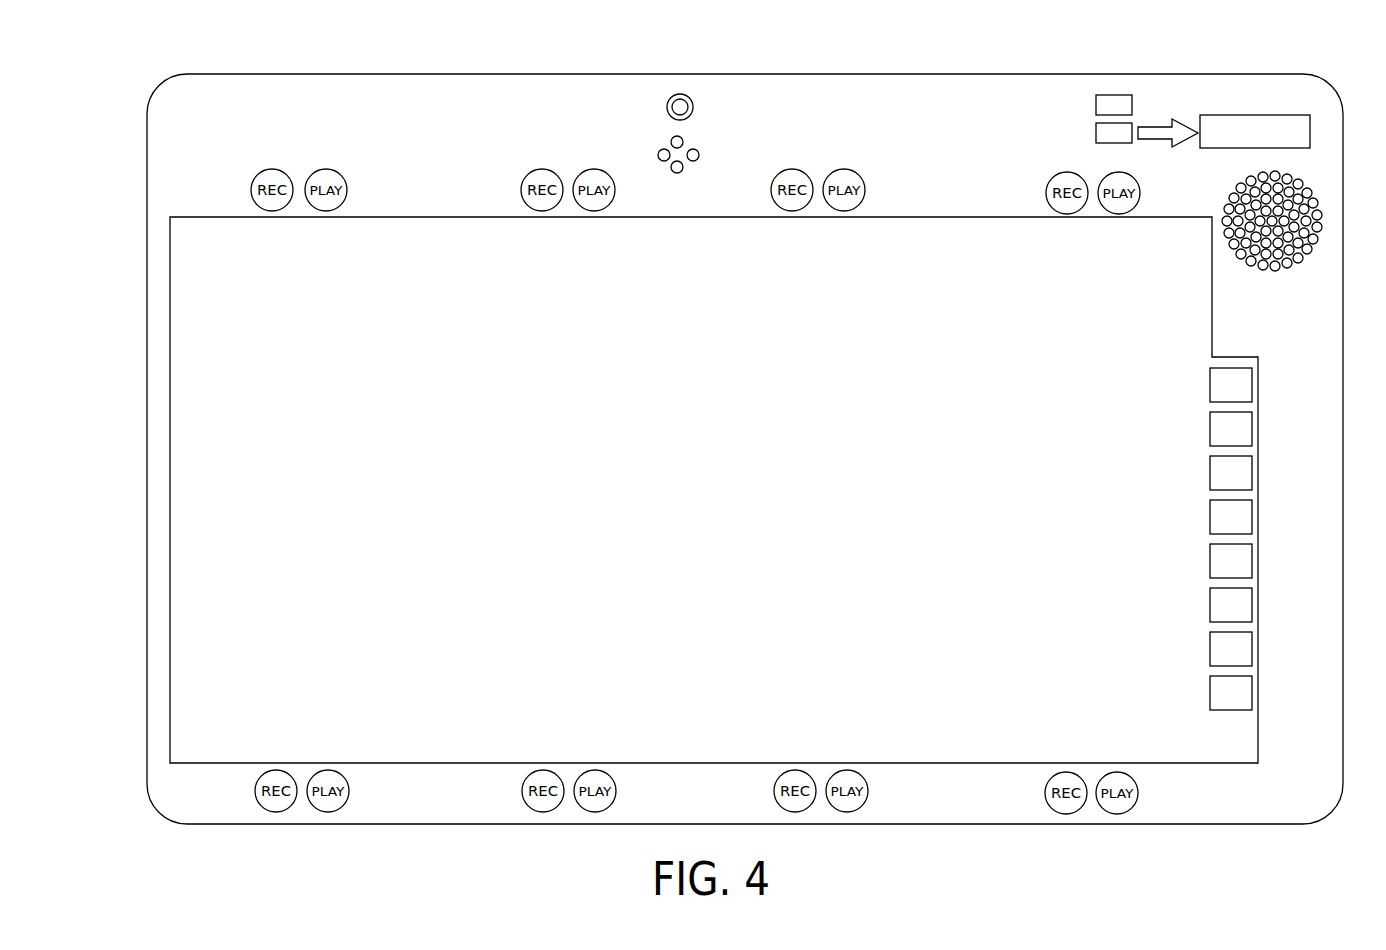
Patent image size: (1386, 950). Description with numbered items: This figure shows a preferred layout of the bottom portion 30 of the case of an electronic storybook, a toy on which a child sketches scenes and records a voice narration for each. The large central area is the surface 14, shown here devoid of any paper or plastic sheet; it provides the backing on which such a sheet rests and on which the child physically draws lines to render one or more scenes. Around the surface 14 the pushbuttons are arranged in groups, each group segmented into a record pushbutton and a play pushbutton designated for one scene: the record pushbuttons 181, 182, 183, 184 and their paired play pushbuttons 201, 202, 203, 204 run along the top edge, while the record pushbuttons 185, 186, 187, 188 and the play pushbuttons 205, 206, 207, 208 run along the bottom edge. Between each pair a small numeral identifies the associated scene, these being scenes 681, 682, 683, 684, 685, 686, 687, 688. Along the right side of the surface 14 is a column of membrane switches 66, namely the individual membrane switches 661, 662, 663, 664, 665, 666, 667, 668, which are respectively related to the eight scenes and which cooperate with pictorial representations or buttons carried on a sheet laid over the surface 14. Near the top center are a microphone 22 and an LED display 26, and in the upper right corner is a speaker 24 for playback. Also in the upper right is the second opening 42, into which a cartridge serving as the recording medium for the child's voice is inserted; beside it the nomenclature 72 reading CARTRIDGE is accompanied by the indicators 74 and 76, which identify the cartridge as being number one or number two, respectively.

The bottom portion 30 is at (386, 74).
The surface 14 is at (744, 407).
The record pushbutton 181 is at (266, 168).
The record pushbutton 182 is at (528, 176).
The record pushbutton 183 is at (771, 193).
The record pushbutton 184 is at (1046, 193).
The record pushbutton 185 is at (258, 778).
The record pushbutton 186 is at (540, 770).
The record pushbutton 187 is at (792, 770).
The record pushbutton 188 is at (1050, 776).
The play pushbutton 201 is at (332, 170).
The play pushbutton 202 is at (580, 172).
The play pushbutton 203 is at (866, 190).
The play pushbutton 204 is at (1141, 195).
The play pushbutton 205 is at (345, 778).
The play pushbutton 206 is at (605, 772).
The play pushbutton 207 is at (858, 772).
The play pushbutton 208 is at (1116, 772).
The scene 681 is at (292, 212).
The scene 682 is at (563, 213).
The scene 683 is at (815, 214).
The scene 684 is at (1097, 214).
The scene 685 is at (302, 768).
The scene 686 is at (567, 768).
The scene 687 is at (821, 768).
The scene 688 is at (1090, 770).
The microphone 22 is at (682, 139).
The LED display 26 is at (684, 94).
The speaker 24 is at (1305, 187).
The second opening 42 is at (1240, 120).
The nomenclature 72 is at (1162, 95).
The cartridge indicator 1 74 is at (1096, 105).
The cartridge indicator 2 76 is at (1096, 133).
The membrane switches 66 is at (1101, 364).
The membrane switch 661 is at (1214, 386).
The membrane switch 662 is at (1214, 430).
The membrane switch 663 is at (1214, 474).
The membrane switch 664 is at (1214, 518).
The membrane switch 665 is at (1214, 562).
The membrane switch 666 is at (1214, 606).
The membrane switch 667 is at (1214, 650).
The membrane switch 668 is at (1214, 694).